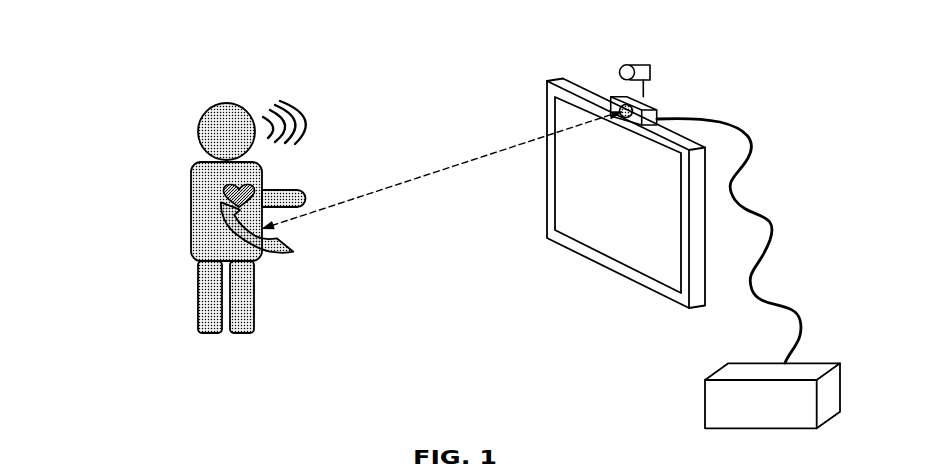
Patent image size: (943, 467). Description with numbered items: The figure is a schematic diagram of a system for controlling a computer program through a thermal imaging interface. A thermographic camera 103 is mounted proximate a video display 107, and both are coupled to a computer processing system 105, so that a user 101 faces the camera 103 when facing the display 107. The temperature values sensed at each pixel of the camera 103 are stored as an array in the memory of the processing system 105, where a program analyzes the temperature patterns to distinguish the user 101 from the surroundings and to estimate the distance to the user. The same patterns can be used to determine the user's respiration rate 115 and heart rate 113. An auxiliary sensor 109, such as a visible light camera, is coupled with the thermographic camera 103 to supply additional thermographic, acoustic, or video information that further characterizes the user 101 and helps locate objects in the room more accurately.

The user 101 is at (265, 163).
The thermographic camera 103 is at (658, 111).
The computer processing system 105 is at (752, 363).
The video display 107 is at (546, 126).
The auxiliary sensor 109 is at (650, 46).
The heart rate 113 is at (223, 191).
The respiration rate 115 is at (338, 100).